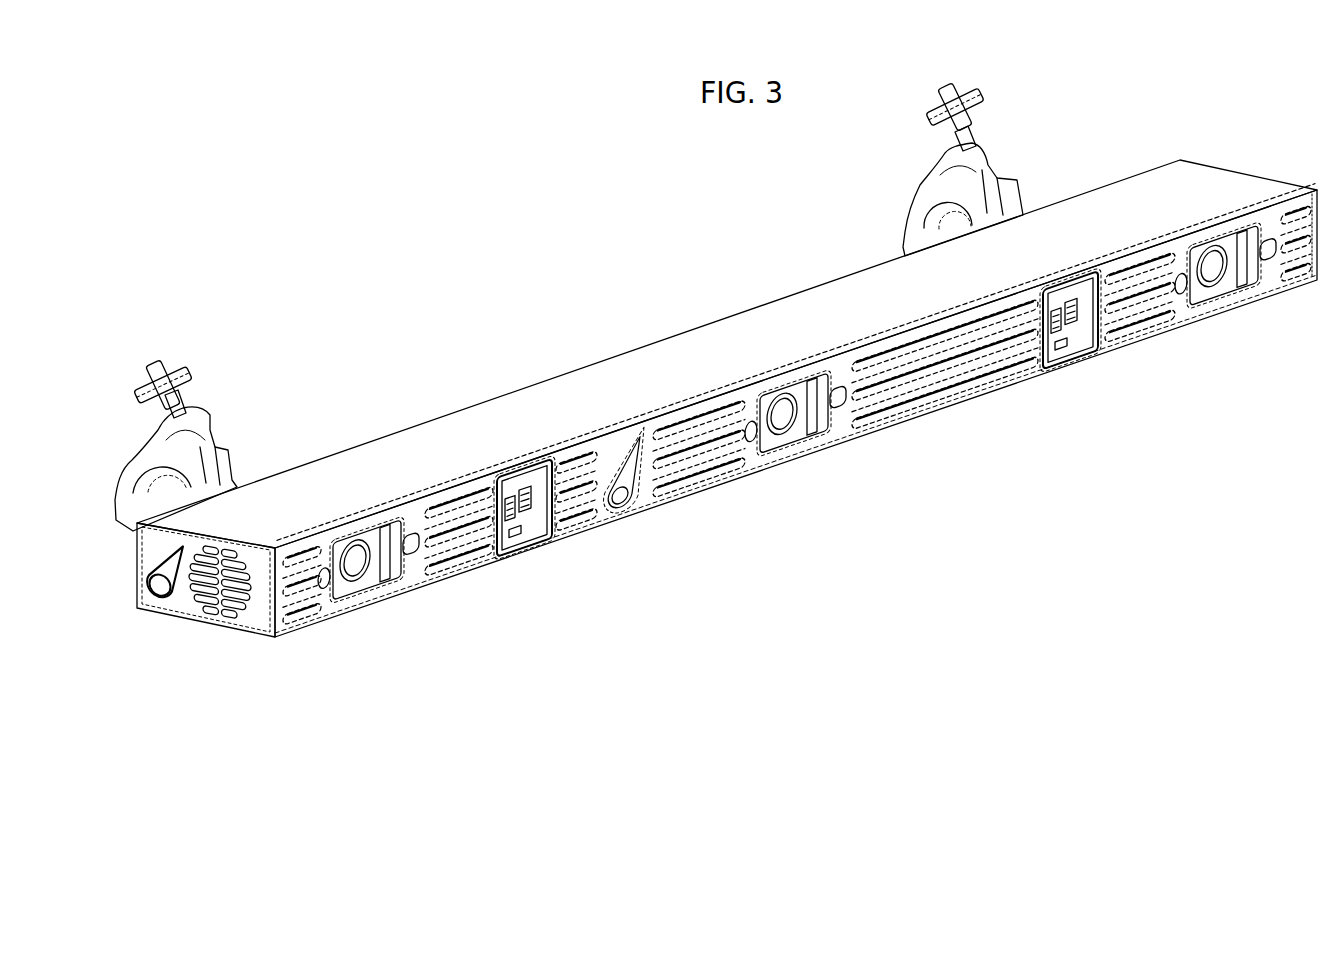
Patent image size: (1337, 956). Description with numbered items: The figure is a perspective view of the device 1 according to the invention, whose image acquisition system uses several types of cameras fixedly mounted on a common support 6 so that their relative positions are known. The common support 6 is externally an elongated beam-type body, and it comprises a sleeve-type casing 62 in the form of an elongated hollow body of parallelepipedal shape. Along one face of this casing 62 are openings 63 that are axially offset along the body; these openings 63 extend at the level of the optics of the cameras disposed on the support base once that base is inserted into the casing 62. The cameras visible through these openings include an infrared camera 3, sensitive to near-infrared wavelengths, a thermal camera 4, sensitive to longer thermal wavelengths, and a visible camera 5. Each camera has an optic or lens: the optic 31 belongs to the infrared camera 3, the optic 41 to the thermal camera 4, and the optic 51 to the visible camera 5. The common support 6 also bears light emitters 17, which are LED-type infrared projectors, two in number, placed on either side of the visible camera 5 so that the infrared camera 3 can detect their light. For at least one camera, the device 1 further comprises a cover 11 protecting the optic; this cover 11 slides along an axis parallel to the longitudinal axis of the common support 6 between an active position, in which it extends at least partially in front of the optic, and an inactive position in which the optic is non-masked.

The device 1 is at (630, 322).
The infrared camera 3 is at (405, 597).
The thermal camera 4 is at (340, 607).
The visible camera 5 is at (810, 437).
The common support 6 is at (428, 450).
The cover 11 is at (413, 560).
The light emitter 17 is at (530, 553).
The optic of the infrared camera 31 is at (1233, 290).
The optic of the thermal camera 41 is at (1193, 297).
The optic of the visible camera 51 is at (780, 440).
The casing 62 is at (343, 490).
The openings 63 is at (370, 593).